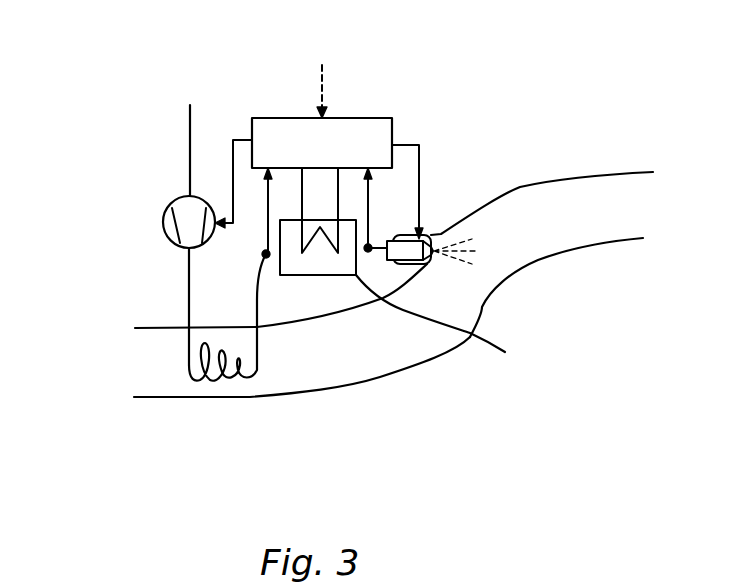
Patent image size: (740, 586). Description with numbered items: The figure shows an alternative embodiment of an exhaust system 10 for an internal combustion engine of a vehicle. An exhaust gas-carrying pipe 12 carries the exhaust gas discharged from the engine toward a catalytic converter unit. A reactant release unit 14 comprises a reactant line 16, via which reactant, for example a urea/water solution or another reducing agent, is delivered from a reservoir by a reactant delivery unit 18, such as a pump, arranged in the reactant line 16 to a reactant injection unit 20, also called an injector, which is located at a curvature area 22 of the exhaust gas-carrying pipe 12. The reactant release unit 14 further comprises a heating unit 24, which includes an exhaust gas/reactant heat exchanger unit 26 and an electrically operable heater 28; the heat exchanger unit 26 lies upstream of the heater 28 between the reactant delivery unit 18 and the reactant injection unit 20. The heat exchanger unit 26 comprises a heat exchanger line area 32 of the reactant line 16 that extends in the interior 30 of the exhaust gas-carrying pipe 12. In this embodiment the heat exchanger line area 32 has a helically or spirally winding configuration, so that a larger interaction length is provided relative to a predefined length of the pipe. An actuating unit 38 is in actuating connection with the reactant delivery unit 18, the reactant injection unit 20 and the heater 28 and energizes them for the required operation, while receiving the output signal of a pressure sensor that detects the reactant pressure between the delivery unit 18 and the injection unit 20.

The exhaust system 10 is at (582, 83).
The exhaust gas-carrying pipe 12 is at (485, 320).
The reactant release unit 14 is at (448, 105).
The reactant line 16 is at (187, 130).
The reactant delivery unit 18 is at (164, 207).
The reactant injection unit 20 is at (401, 238).
The curvature area 22 is at (470, 248).
The heating unit 24 is at (340, 344).
The exhaust gas/reactant heat exchanger unit 26 is at (249, 408).
The heater 28 is at (448, 336).
The interior 30 is at (148, 365).
The heat exchanger line area 32 is at (213, 381).
The actuating unit 38 is at (350, 118).